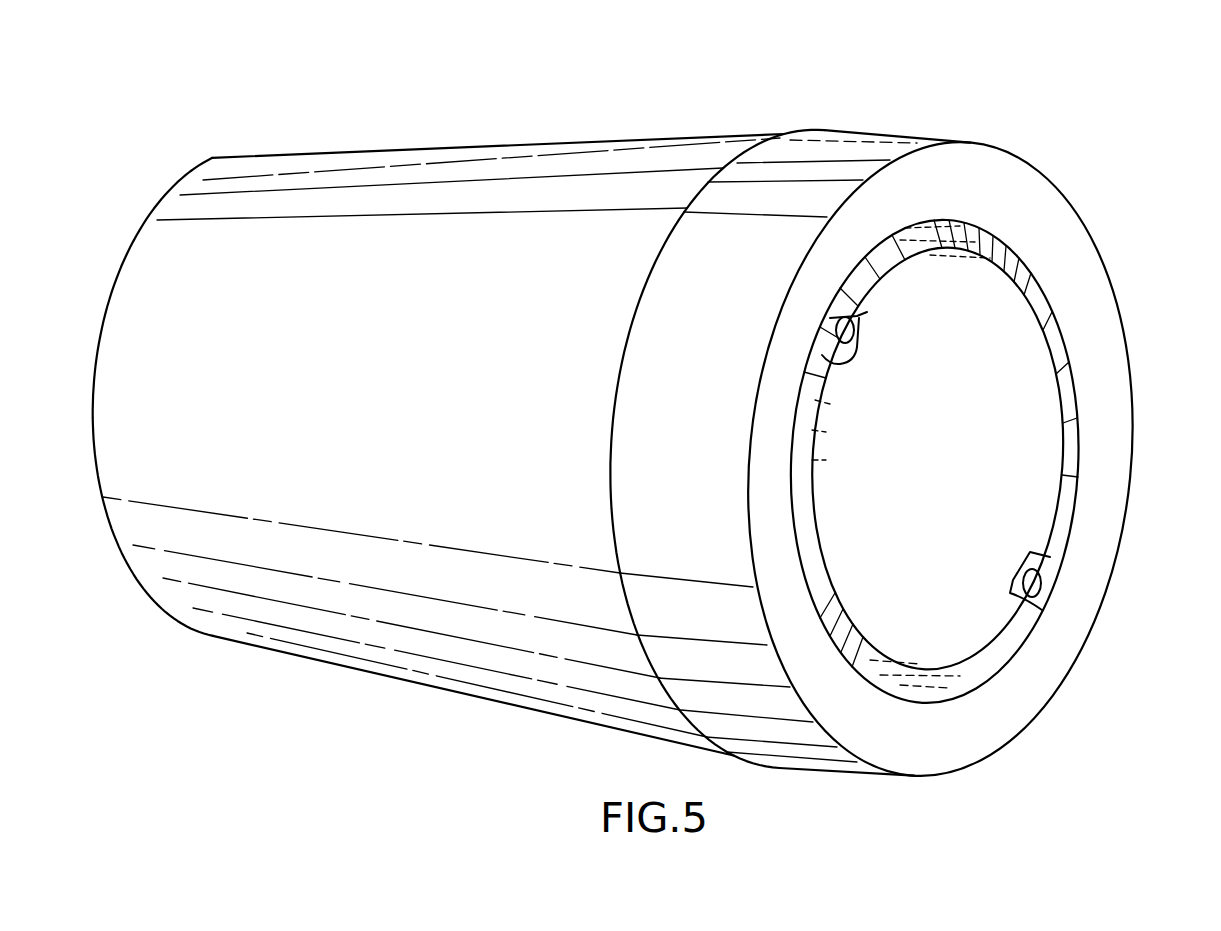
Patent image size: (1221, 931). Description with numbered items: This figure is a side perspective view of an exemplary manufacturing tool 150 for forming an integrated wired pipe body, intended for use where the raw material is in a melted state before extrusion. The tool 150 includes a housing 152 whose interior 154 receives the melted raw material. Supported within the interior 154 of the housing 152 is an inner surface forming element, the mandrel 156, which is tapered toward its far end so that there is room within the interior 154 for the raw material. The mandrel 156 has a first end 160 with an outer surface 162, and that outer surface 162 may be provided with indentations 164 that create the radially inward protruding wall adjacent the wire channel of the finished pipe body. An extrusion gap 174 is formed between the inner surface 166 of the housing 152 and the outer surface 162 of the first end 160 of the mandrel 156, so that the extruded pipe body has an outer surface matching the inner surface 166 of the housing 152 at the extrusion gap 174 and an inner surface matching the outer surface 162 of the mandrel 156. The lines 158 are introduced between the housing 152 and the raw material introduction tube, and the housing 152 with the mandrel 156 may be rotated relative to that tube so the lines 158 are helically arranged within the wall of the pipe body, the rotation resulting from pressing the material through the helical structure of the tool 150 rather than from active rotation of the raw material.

The manufacturing tool 150 is at (620, 116).
The housing 152 is at (443, 162).
The interior 154 is at (927, 683).
The mandrel 156 is at (967, 620).
The lines 158 is at (834, 327).
The first end 160 is at (990, 613).
The outer surface 162 is at (890, 257).
The indentations 164 is at (838, 352).
The inner surface 166 is at (1060, 527).
The extrusion gap 174 is at (993, 230).